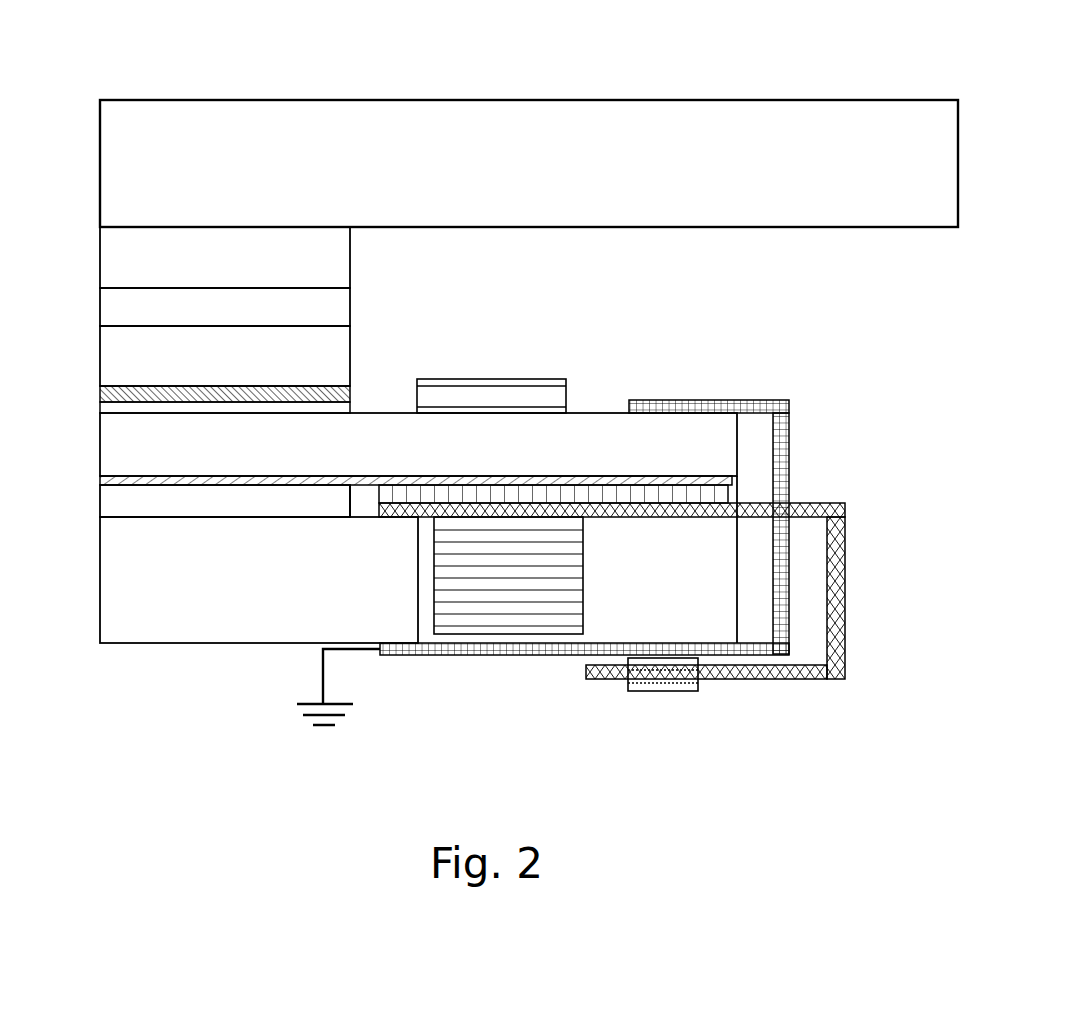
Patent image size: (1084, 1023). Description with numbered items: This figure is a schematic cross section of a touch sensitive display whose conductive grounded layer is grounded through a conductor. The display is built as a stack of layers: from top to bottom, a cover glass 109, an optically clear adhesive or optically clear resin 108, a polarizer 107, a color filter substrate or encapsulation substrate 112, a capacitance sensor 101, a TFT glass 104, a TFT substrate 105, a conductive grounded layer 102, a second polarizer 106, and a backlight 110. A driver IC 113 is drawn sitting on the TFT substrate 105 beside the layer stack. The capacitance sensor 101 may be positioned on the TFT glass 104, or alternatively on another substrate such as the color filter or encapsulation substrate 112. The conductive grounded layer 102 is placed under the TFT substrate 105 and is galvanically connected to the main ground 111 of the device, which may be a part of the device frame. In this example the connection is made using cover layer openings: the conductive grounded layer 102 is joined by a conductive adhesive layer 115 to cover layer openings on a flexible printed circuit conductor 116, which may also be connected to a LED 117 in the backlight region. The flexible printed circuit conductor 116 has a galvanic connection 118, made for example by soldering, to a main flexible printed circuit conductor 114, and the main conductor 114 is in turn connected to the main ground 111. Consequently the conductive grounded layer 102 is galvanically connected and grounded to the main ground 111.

The cover glass 109 is at (173, 100).
The optically clear adhesive or optically clear resin 108 is at (351, 252).
The polarizer 107 is at (351, 310).
The color filter substrate or encapsulation substrate 112 is at (351, 350).
The capacitance sensor 101 is at (352, 393).
The TFT glass 104 is at (100, 412).
The TFT substrate 105 is at (595, 413).
The driver IC 113 is at (500, 378).
The main flexible printed circuit conductor 114 is at (789, 403).
The conductive grounded layer 102 is at (100, 480).
The conductive adhesive layer 115 is at (730, 496).
The flexible printed circuit conductor 116 is at (845, 503).
The polarizer 106 is at (100, 510).
The backlight 110 is at (165, 648).
The LED 117 is at (585, 572).
The main ground 111 is at (353, 704).
The galvanic connection 118 is at (661, 692).